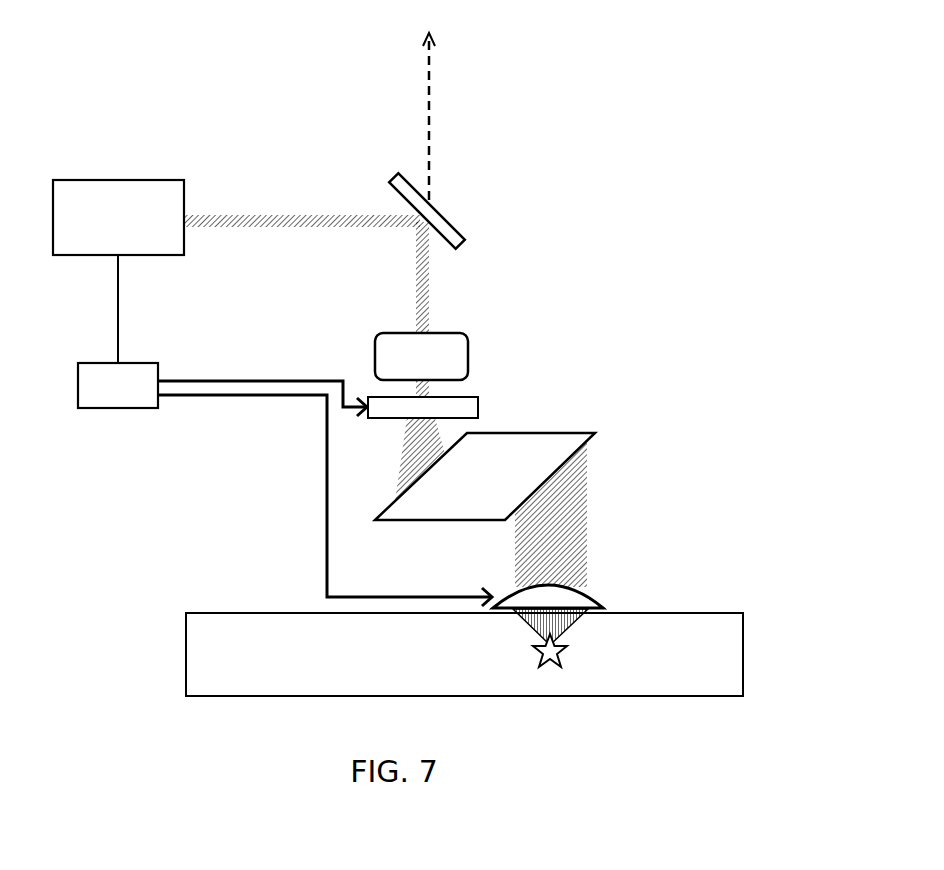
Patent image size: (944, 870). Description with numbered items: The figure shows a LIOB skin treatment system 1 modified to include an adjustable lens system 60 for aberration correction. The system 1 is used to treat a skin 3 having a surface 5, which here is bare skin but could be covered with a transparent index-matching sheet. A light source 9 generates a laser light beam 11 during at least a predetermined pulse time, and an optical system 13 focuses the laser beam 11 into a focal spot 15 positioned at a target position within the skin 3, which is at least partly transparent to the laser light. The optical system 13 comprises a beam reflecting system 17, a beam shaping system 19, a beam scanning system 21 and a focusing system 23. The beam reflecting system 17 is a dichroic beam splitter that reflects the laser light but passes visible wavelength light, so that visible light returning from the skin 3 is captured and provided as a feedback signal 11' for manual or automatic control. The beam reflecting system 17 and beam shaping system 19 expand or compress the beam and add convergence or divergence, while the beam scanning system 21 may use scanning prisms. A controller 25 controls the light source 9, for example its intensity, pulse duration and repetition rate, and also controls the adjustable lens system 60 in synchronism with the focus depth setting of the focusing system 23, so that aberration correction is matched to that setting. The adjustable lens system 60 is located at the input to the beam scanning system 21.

The LIOB system 1 is at (398, 359).
The skin 3 is at (250, 597).
The surface 5 is at (327, 612).
The light source 9 is at (118, 217).
The laser light beam 11 is at (424, 361).
The feedback signal 11' is at (465, 111).
The optical system 13 is at (496, 415).
The focal spot 15 is at (560, 649).
The beam reflecting system 17 is at (432, 203).
The beam shaping system 19 is at (421, 356).
The beam scanning system 21 is at (485, 476).
The focusing system 23 is at (598, 591).
The controller 25 is at (285, 430).
The adjustable lens system 60 is at (478, 405).